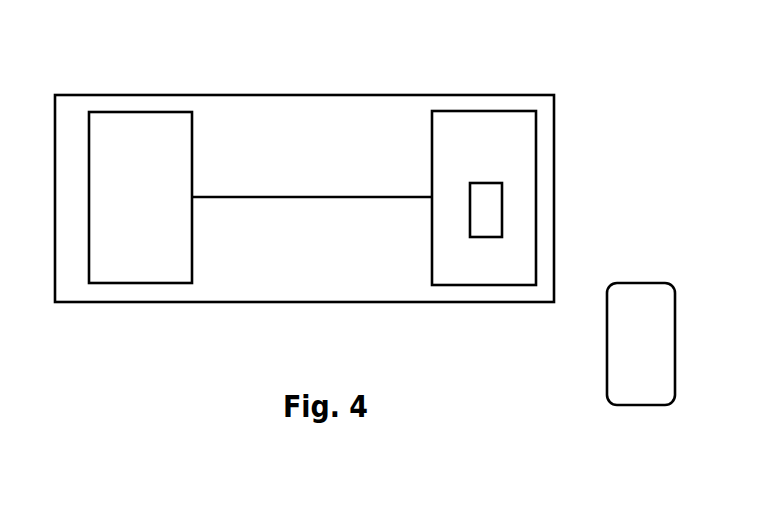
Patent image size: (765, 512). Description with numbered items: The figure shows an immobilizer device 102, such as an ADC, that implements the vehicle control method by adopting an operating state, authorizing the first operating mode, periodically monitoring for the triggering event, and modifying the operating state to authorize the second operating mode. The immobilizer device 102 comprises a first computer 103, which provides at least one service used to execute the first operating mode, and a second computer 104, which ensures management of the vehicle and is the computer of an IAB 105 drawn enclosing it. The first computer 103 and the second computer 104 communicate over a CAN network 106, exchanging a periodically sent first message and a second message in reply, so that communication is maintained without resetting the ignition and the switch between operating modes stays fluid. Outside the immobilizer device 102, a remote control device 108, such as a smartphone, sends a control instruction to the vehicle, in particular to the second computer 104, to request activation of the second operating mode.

The immobilizer device 102 is at (437, 86).
The first computer 103 is at (125, 112).
The second computer 104 is at (495, 207).
The IAB 105 is at (537, 144).
The CAN network 106 is at (292, 197).
The remote control device 108 is at (608, 362).